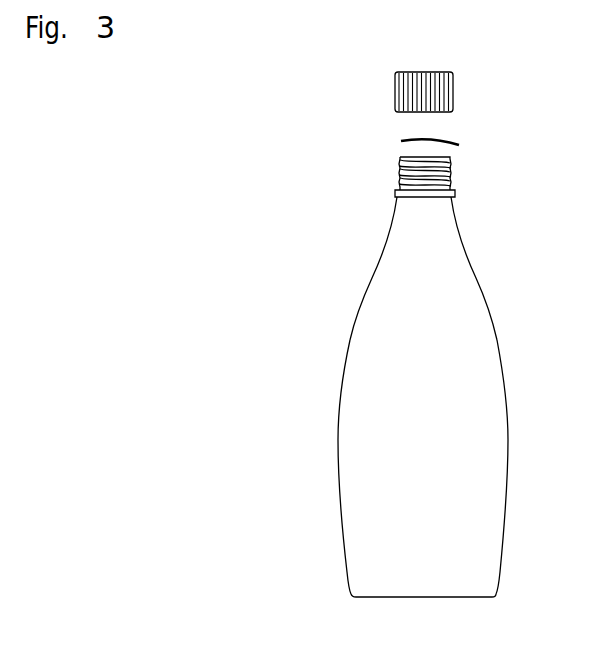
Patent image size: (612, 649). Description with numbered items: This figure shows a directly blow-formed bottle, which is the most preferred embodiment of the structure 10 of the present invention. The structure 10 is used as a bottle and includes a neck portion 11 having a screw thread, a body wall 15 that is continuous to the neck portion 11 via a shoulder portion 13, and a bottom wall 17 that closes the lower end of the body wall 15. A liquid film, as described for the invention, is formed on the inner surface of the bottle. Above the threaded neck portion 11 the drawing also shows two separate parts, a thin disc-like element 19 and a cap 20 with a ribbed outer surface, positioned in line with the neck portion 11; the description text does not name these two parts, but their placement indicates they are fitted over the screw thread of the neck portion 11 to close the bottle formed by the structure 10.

The structure 10 is at (405, 398).
The neck portion 11 is at (463, 176).
The shoulder portion 13 is at (490, 282).
The body wall 15 is at (497, 412).
The bottom wall 17 is at (465, 597).
The seal / liner 19 is at (403, 141).
The cap 20 is at (455, 92).